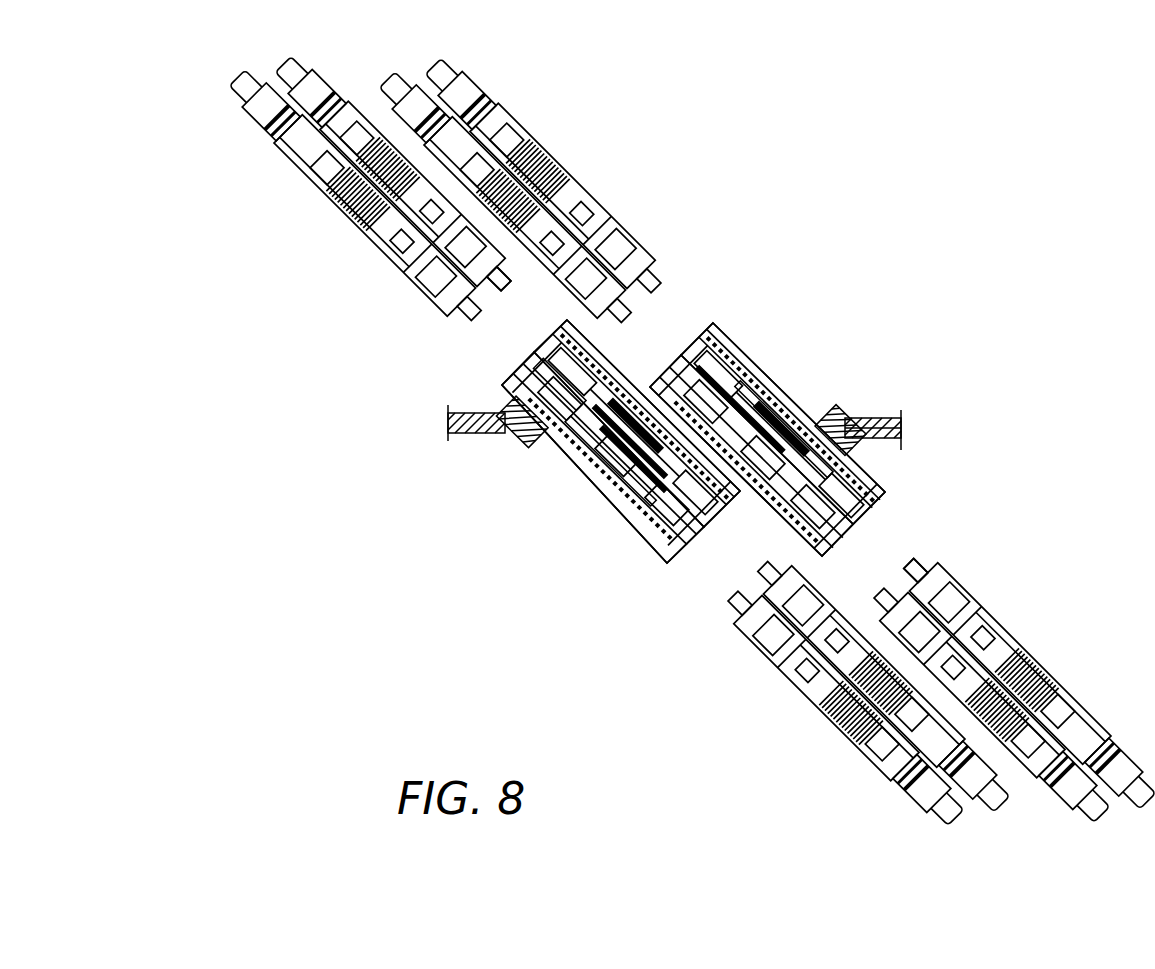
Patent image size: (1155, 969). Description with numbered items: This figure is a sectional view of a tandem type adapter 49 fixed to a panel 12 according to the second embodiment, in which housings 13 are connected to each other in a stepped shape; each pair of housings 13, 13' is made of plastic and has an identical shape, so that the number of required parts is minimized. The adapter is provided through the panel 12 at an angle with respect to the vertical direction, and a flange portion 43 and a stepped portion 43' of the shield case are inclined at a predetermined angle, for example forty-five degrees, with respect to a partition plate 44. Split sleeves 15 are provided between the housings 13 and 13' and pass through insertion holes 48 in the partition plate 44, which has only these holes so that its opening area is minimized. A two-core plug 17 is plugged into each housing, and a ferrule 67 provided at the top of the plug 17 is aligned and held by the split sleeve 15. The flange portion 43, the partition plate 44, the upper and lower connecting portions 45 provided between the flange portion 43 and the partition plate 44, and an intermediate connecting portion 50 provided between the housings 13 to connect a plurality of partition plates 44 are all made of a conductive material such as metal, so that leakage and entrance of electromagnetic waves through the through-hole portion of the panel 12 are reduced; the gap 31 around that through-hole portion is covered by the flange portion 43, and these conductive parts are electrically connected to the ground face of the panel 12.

The panel 12 is at (884, 418).
The housing 13 is at (742, 492).
The housing 13' is at (647, 392).
The split sleeve 15 is at (560, 462).
The two-core plug 17 is at (365, 248).
The gap 31 is at (863, 421).
The flange portion 43 is at (711, 460).
The stepped portion 43' is at (669, 417).
The partition plate 44 is at (610, 500).
The upper and lower connecting portions 45 is at (570, 470).
The insertion hole 48 is at (615, 492).
The tandem type adapter 49 is at (760, 321).
The intermediate connecting portion 50 is at (698, 440).
The ferrule 67 is at (460, 317).